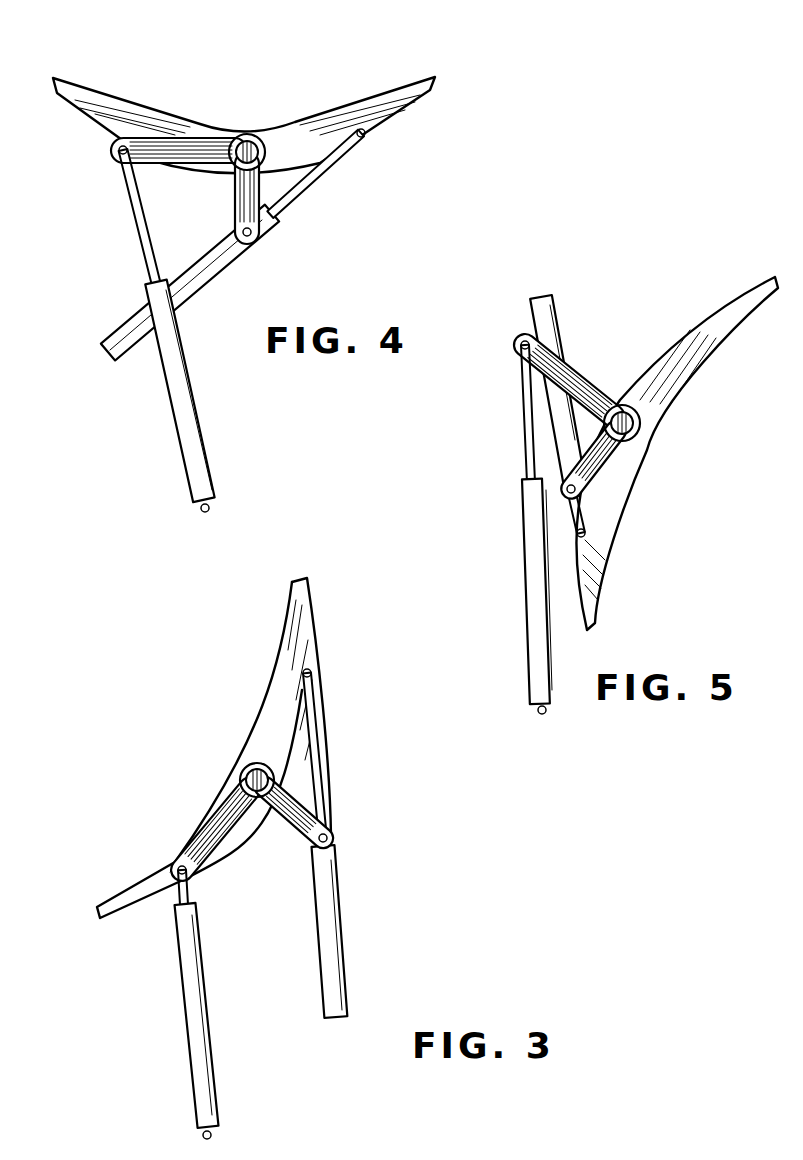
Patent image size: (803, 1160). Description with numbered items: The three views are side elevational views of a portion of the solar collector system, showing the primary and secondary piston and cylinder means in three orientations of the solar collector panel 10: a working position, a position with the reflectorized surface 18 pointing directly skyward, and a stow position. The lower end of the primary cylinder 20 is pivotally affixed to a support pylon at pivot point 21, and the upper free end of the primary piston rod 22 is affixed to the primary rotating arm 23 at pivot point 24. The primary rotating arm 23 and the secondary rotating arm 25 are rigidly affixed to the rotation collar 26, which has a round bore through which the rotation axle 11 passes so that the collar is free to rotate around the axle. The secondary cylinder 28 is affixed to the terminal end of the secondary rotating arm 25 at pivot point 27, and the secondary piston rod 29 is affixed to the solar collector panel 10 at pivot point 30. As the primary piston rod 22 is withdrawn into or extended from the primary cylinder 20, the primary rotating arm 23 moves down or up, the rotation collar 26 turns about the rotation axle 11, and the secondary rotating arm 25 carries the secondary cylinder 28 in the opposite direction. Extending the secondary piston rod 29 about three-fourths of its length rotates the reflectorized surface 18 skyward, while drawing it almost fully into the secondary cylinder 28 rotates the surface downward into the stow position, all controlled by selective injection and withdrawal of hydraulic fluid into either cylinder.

In FIG. 4, the solar collector panel 10 is at (334, 110).
In FIG. 5, the solar collector panel 10 is at (742, 285).
In FIG. 3, the solar collector panel 10 is at (321, 608).
In FIG. 4, the rotation axle 11 is at (244, 140).
In FIG. 5, the rotation axle 11 is at (637, 440).
In FIG. 3, the rotation axle 11 is at (250, 778).
In FIG. 4, the reflectorized surface 18 is at (300, 118).
In FIG. 5, the reflectorized surface 18 is at (690, 380).
In FIG. 3, the reflectorized surface 18 is at (278, 692).
In FIG. 4, the primary cylinder 20 is at (160, 390).
In FIG. 5, the primary cylinder 20 is at (522, 630).
In FIG. 3, the primary cylinder 20 is at (205, 955).
In FIG. 4, the pivot point 21 is at (200, 509).
In FIG. 5, the pivot point 21 is at (541, 716).
In FIG. 3, the pivot point 21 is at (213, 1136).
In FIG. 4, the primary piston rod 22 is at (134, 208).
In FIG. 5, the primary piston rod 22 is at (524, 430).
In FIG. 3, the primary piston rod 22 is at (189, 896).
In FIG. 4, the primary rotating arm 23 is at (150, 138).
In FIG. 5, the primary rotating arm 23 is at (580, 360).
In FIG. 3, the primary rotating arm 23 is at (210, 800).
In FIG. 4, the pivot point 24 is at (118, 151).
In FIG. 5, the pivot point 24 is at (522, 338).
In FIG. 3, the pivot point 24 is at (179, 862).
In FIG. 4, the secondary rotating arm 25 is at (260, 200).
In FIG. 5, the secondary rotating arm 25 is at (615, 475).
In FIG. 3, the secondary rotating arm 25 is at (290, 817).
In FIG. 4, the rotation collar 26 is at (254, 136).
In FIG. 5, the rotation collar 26 is at (645, 424).
In FIG. 3, the rotation collar 26 is at (245, 766).
In FIG. 4, the pivot point 27 is at (251, 240).
In FIG. 5, the pivot point 27 is at (580, 495).
In FIG. 3, the pivot point 27 is at (334, 838).
In FIG. 4, the secondary cylinder 28 is at (195, 285).
In FIG. 5, the secondary cylinder 28 is at (554, 303).
In FIG. 3, the secondary cylinder 28 is at (348, 890).
In FIG. 4, the secondary piston rod 29 is at (318, 180).
In FIG. 5, the secondary piston rod 29 is at (585, 522).
In FIG. 3, the secondary piston rod 29 is at (324, 745).
In FIG. 4, the pivot point 30 is at (365, 140).
In FIG. 5, the pivot point 30 is at (586, 548).
In FIG. 3, the pivot point 30 is at (313, 668).